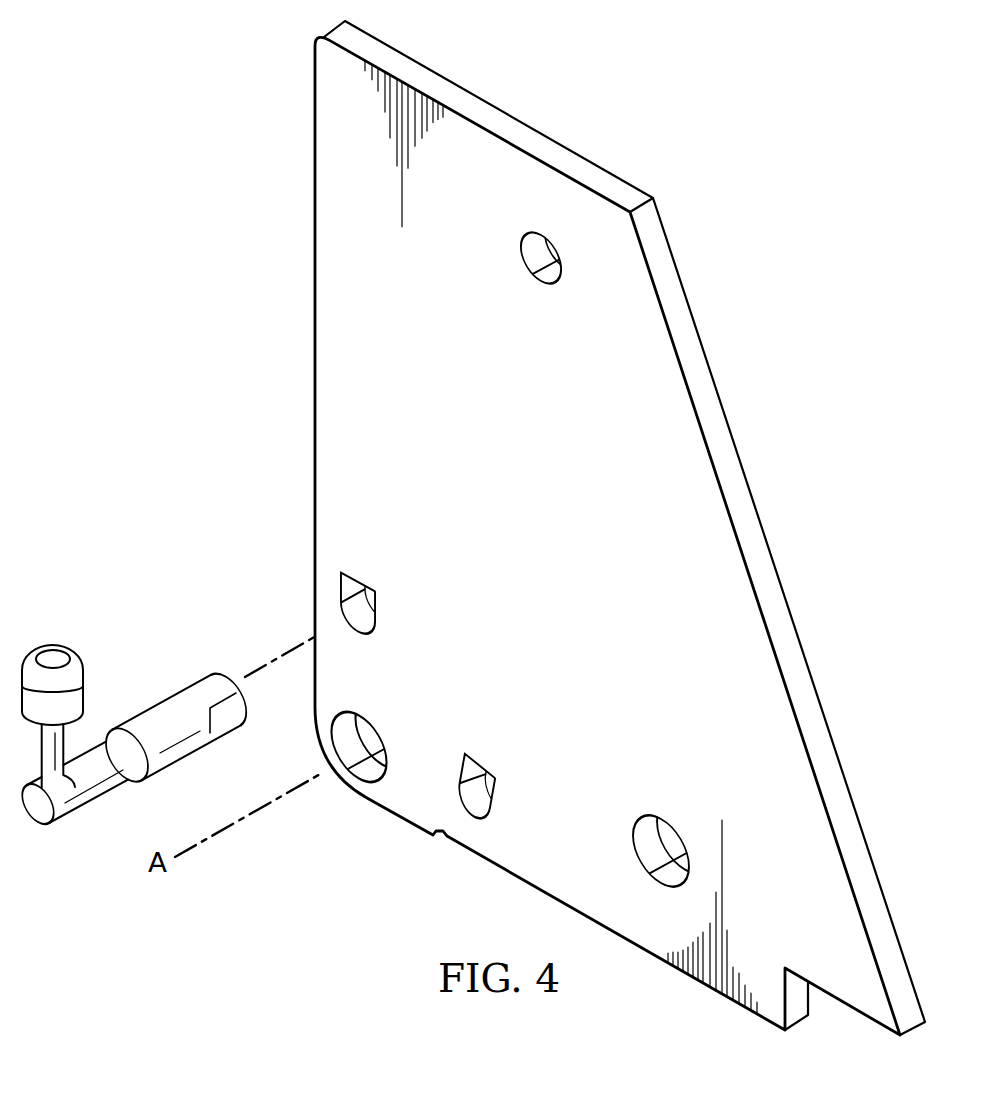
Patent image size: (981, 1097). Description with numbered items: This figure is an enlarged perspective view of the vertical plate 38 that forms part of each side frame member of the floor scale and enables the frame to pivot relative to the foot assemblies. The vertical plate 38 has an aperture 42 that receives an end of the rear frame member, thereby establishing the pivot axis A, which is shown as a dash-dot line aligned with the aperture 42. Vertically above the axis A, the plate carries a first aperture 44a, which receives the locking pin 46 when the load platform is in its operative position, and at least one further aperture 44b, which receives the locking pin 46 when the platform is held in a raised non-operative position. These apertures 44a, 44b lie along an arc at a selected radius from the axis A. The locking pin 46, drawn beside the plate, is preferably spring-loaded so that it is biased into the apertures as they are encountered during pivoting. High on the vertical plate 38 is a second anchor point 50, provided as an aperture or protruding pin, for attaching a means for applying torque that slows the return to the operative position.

The vertical plate 38 is at (620, 528).
The aperture 42 is at (359, 784).
The aperture 44a is at (362, 634).
The aperture 44b is at (478, 756).
The locking pin 46 is at (153, 699).
The second point for anchoring 50 is at (546, 286).